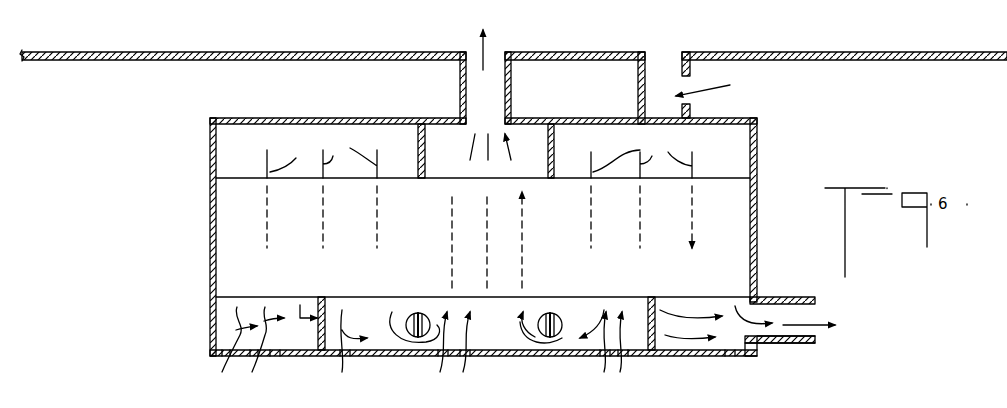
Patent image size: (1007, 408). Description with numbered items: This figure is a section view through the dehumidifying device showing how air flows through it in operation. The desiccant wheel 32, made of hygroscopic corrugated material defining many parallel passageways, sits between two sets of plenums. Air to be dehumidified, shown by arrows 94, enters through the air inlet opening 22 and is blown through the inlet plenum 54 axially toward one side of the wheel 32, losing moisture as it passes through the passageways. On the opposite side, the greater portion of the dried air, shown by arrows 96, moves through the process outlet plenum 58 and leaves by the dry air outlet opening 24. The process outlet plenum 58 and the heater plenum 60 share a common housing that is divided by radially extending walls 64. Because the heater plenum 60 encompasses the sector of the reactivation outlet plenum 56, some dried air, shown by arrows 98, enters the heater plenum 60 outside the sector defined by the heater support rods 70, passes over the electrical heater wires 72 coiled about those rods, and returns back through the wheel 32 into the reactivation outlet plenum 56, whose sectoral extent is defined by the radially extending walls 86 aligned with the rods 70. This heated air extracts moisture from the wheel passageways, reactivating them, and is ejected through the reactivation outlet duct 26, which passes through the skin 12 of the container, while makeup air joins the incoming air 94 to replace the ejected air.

The skin 12 is at (196, 52).
The air inlet opening 22 is at (677, 50).
The dry air outlet opening 24 is at (796, 297).
The reactivation outlet duct 26 is at (511, 80).
The desiccant wheel 32 is at (230, 233).
The inlet plenum 54 is at (251, 131).
The reactivation outlet plenum 56 is at (438, 126).
The process outlet plenum 58 is at (276, 355).
The heater plenum 60 is at (503, 355).
The radially extending walls 64 is at (680, 280).
The heater support rods 70 is at (418, 338).
The electrical heater wires 72 is at (418, 316).
The radially extending walls 86 is at (418, 160).
The air to be dehumidified 94 is at (330, 167).
The dried air 96 is at (231, 355).
The reactivation air 98 is at (487, 50).